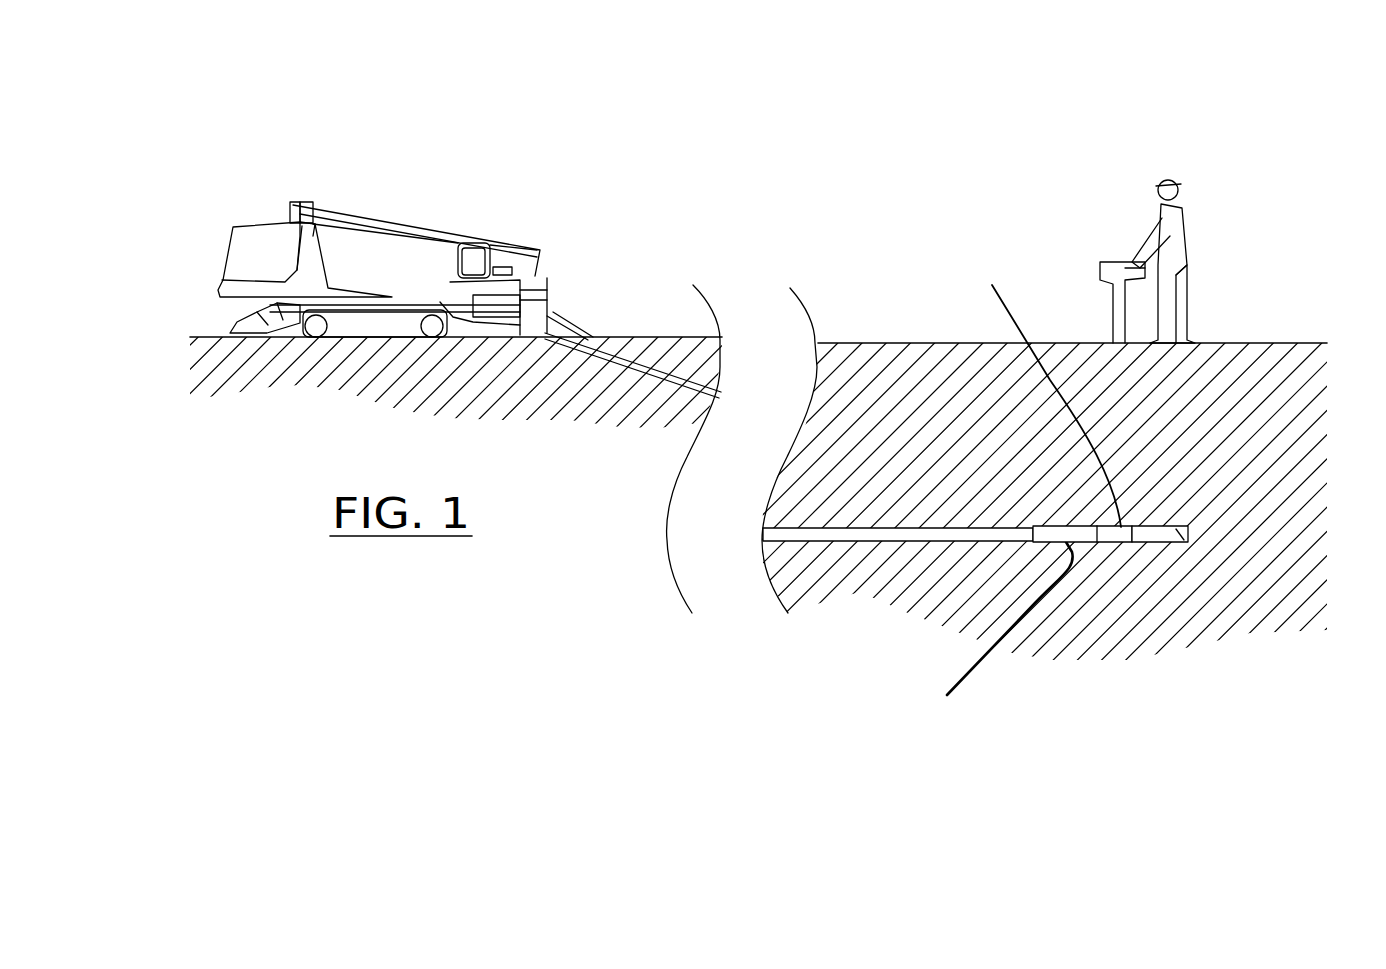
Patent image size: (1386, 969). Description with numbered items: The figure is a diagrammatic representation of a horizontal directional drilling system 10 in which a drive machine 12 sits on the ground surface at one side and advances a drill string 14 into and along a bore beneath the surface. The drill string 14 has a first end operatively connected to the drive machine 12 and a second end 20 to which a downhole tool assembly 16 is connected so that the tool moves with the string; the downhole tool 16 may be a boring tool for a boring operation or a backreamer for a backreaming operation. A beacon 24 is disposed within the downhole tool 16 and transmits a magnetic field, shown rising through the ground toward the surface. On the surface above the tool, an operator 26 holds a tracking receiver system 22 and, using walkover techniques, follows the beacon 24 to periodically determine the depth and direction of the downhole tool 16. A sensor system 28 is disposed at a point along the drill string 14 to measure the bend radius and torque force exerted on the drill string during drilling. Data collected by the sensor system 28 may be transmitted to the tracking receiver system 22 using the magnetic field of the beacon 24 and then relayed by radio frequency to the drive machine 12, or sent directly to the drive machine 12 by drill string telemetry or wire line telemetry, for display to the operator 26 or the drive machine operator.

The drilling system 10 is at (683, 117).
The drive machine 12 is at (281, 223).
The drill string 14 is at (970, 543).
The downhole tool assembly 16 is at (1170, 547).
The second end 20 is at (1133, 545).
The tracking receiver system 22 is at (1100, 270).
The beacon 24 is at (1044, 392).
The operator 26 is at (1163, 172).
The sensor system 28 is at (580, 335).